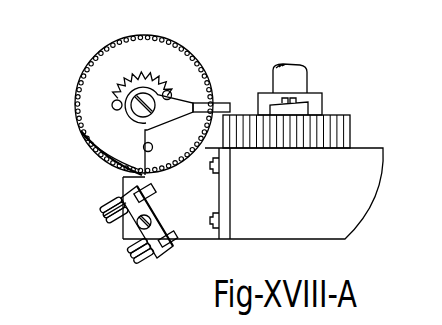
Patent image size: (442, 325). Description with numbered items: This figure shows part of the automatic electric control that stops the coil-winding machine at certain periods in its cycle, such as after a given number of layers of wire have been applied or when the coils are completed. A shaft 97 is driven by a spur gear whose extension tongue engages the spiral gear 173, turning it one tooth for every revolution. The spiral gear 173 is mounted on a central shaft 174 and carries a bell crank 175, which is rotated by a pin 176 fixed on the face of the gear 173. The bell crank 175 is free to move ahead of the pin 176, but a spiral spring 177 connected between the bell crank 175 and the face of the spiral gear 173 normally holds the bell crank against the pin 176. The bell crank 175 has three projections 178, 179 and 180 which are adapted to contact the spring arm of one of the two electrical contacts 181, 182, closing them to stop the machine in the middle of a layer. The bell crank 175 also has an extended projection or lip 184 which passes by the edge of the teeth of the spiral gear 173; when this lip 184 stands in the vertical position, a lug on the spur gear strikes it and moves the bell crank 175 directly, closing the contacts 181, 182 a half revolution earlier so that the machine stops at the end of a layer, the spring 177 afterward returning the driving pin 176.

The shaft 97 is at (301, 67).
The spiral gear 173 is at (120, 58).
The spiral spring 177 is at (119, 82).
The central shaft 174 is at (128, 97).
The bell crank 175 is at (117, 133).
The projection 180 is at (82, 133).
The projection 179 is at (106, 158).
The pin 176 is at (143, 148).
The projection 178 is at (122, 178).
The electrical contact 181 is at (175, 242).
The electrical contact 182 is at (122, 238).
The extended projection (lip) 184 is at (221, 102).